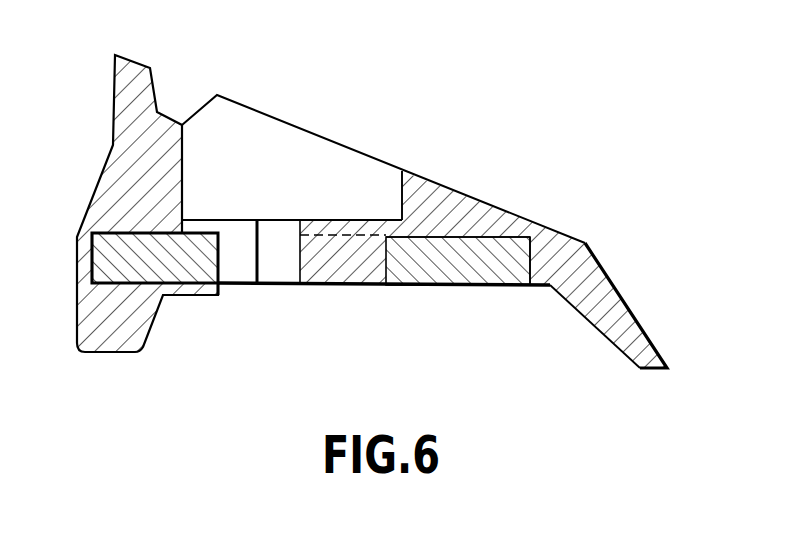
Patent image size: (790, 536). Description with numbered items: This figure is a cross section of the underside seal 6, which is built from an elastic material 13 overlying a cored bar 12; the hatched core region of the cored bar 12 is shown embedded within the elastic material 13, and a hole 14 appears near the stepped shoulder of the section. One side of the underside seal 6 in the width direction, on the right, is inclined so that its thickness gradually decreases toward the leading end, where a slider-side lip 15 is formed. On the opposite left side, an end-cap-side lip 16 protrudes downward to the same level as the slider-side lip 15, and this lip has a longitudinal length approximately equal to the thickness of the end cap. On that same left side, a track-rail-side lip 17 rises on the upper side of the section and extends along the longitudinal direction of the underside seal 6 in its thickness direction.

The underside seal 6 is at (357, 199).
The cored bar 12 is at (193, 272).
The elastic material 13 is at (529, 249).
The hole 14 is at (400, 197).
The slider-side lip 15 is at (457, 205).
The end-cap-side lip 16 is at (135, 90).
The track-rail-side lip 17 is at (130, 199).